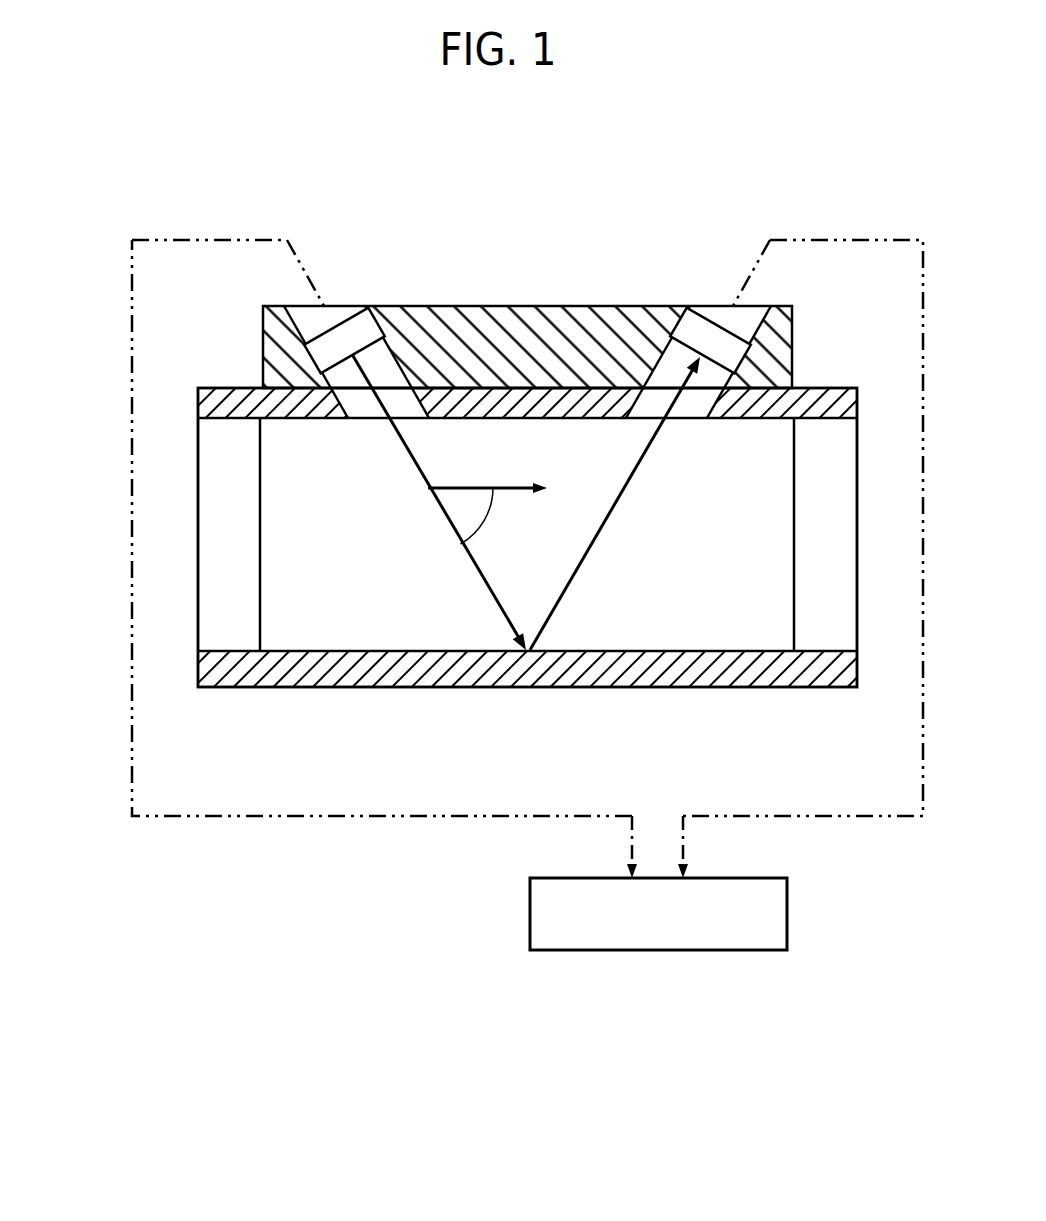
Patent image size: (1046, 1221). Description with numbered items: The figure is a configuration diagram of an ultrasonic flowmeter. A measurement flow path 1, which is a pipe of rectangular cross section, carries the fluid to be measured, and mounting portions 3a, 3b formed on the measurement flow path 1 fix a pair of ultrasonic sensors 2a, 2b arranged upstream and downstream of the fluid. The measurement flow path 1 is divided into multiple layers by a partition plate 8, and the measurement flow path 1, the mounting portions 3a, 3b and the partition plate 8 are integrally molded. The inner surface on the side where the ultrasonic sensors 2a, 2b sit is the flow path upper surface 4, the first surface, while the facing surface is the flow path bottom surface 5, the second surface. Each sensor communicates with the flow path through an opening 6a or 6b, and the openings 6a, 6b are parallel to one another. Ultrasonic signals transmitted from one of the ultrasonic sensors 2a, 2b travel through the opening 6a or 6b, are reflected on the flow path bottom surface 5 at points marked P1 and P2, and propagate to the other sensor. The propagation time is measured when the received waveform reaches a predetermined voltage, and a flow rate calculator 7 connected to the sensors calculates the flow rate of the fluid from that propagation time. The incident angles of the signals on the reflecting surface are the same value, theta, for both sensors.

The measurement flow path 1 is at (287, 533).
The ultrasonic sensor 2a is at (350, 307).
The ultrasonic sensor 2b is at (705, 307).
The mounting portion 3a is at (292, 307).
The mounting portion 3b is at (763, 307).
The flow path upper surface 4 is at (310, 419).
The flow path bottom surface 5 is at (305, 651).
The opening 6a is at (372, 407).
The opening 6b is at (700, 407).
The flow rate calculator 7 is at (637, 950).
The partition plate 8 is at (258, 487).
The first reflection point P1 is at (478, 573).
The second reflection point P2 is at (595, 540).